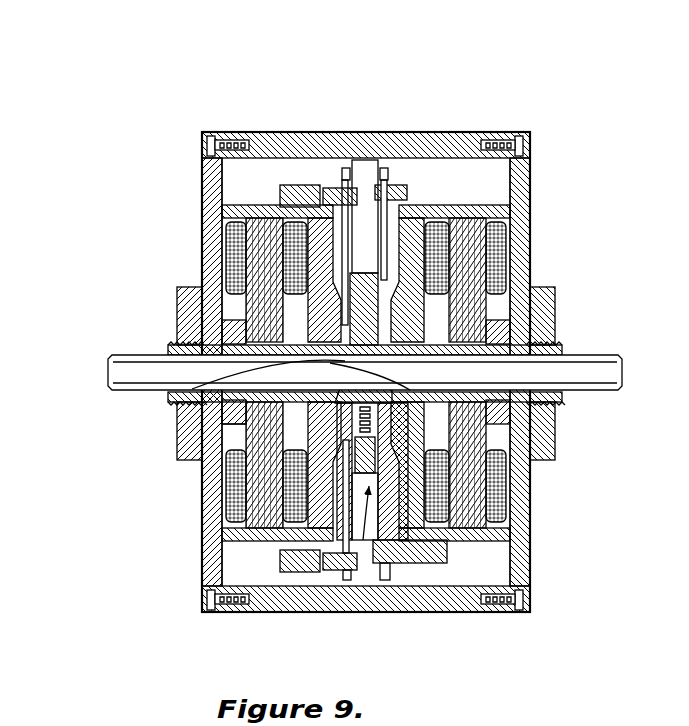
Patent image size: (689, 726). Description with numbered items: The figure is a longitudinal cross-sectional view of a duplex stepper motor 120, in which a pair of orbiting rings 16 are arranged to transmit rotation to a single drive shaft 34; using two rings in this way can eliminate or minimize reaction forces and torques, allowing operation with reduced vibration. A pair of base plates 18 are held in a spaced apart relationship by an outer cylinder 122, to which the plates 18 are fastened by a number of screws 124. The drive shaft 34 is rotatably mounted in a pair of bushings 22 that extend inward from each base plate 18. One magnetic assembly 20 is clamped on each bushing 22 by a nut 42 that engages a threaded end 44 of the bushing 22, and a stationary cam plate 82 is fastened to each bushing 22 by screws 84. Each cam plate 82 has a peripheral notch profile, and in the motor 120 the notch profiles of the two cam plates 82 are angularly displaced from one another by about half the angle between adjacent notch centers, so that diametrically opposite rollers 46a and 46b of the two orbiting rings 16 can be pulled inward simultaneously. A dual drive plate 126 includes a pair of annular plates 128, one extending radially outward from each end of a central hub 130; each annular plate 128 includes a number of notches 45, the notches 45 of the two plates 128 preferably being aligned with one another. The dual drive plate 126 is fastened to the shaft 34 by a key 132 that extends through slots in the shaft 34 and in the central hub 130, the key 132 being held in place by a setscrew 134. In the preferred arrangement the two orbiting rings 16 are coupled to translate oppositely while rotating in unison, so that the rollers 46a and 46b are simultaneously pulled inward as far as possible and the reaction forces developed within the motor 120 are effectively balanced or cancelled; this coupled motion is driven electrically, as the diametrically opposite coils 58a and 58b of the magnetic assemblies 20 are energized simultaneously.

The duplex stepper motor 120 is at (178, 650).
The outer cylinder 122 is at (370, 133).
The stationary cam plate 82 is at (204, 203).
The base plate 18 is at (203, 182).
The screw 124 is at (250, 135).
The orbiting ring 16 is at (263, 613).
The magnetic assembly 20 is at (250, 305).
The coil 58a is at (228, 238).
The coil 58b is at (504, 502).
The setscrew 134 is at (232, 493).
The annular plate 128 is at (305, 187).
The roller 46a is at (343, 168).
The roller 46b is at (397, 570).
The central hub 130 is at (383, 165).
The notch 45 is at (364, 160).
The dual drive plate 126 is at (369, 612).
The bushing 22 is at (528, 342).
The nut 42 is at (182, 315).
The threaded end 44 is at (172, 398).
The drive shaft 34 is at (134, 354).
The key 132 is at (245, 376).
The screw 84 is at (215, 460).